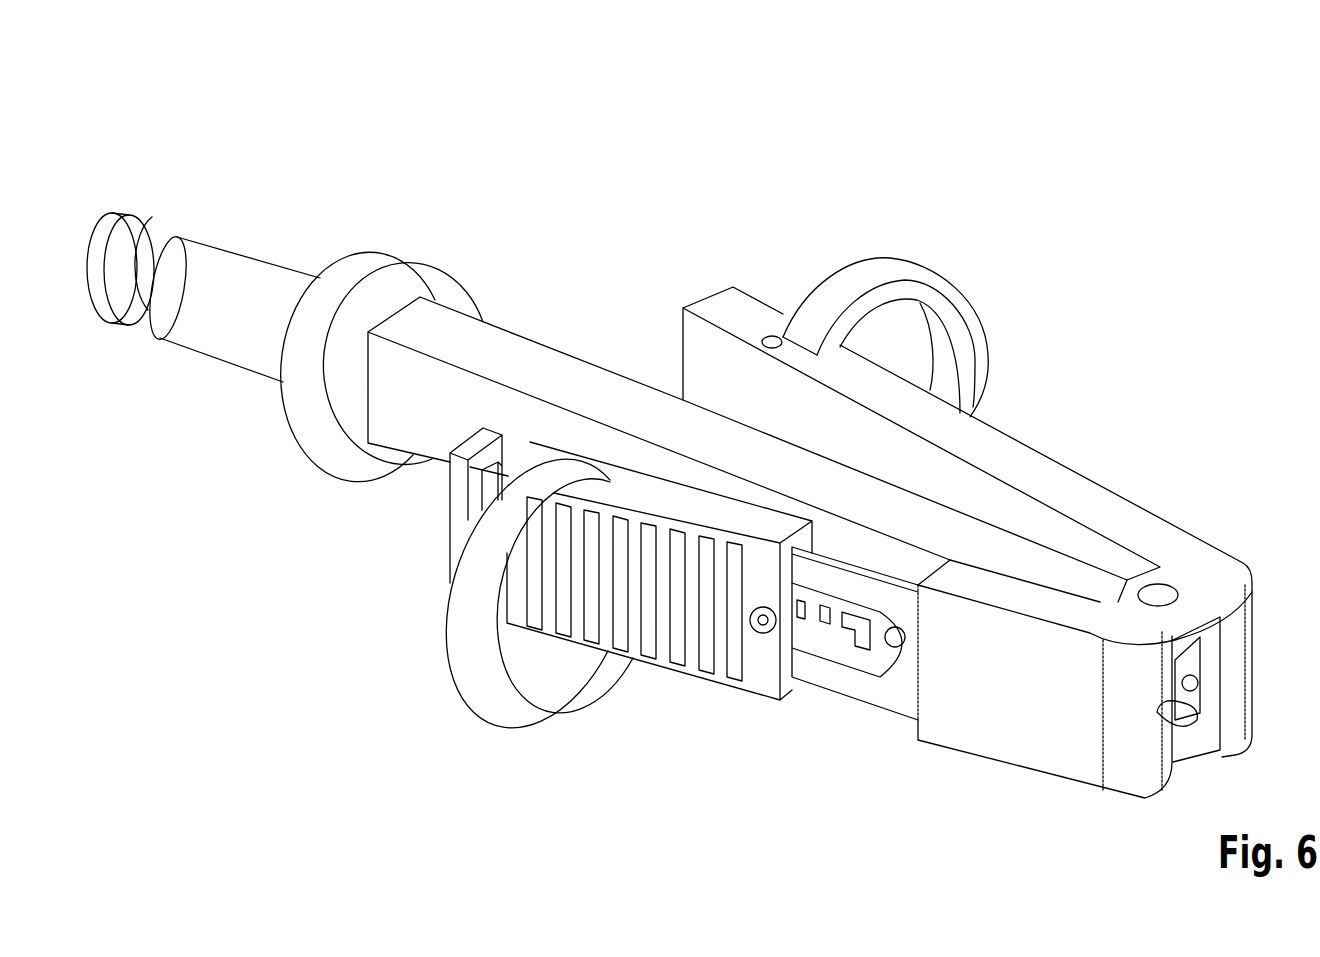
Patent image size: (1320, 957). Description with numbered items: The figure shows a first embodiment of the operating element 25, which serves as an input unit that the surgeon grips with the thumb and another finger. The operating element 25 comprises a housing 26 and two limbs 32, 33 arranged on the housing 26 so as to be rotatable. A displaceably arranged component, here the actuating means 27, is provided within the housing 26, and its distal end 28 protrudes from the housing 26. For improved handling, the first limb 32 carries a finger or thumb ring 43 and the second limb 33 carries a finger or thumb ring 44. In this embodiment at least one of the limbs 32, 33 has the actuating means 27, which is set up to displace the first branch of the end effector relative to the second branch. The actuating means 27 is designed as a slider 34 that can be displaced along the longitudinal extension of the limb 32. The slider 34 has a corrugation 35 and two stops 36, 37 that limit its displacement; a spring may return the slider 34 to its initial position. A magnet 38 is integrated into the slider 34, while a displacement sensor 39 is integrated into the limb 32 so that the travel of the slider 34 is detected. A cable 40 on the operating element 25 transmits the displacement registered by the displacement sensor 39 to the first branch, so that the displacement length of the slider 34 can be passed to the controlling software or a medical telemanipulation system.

The operating element 25 is at (578, 140).
The housing 26 is at (540, 362).
The actuating means 27 is at (153, 250).
The distal end 28 is at (124, 212).
The first limb 32 is at (1012, 752).
The second limb 33 is at (1055, 473).
The slider 34 is at (636, 655).
The corrugation 35 is at (680, 648).
The stop 36 is at (905, 722).
The stop 37 is at (468, 502).
The magnet 38 is at (763, 628).
The displacement sensor 39 is at (842, 640).
The cable 40 is at (1207, 692).
The finger or thumb ring 43 is at (488, 712).
The finger or thumb ring 44 is at (880, 268).